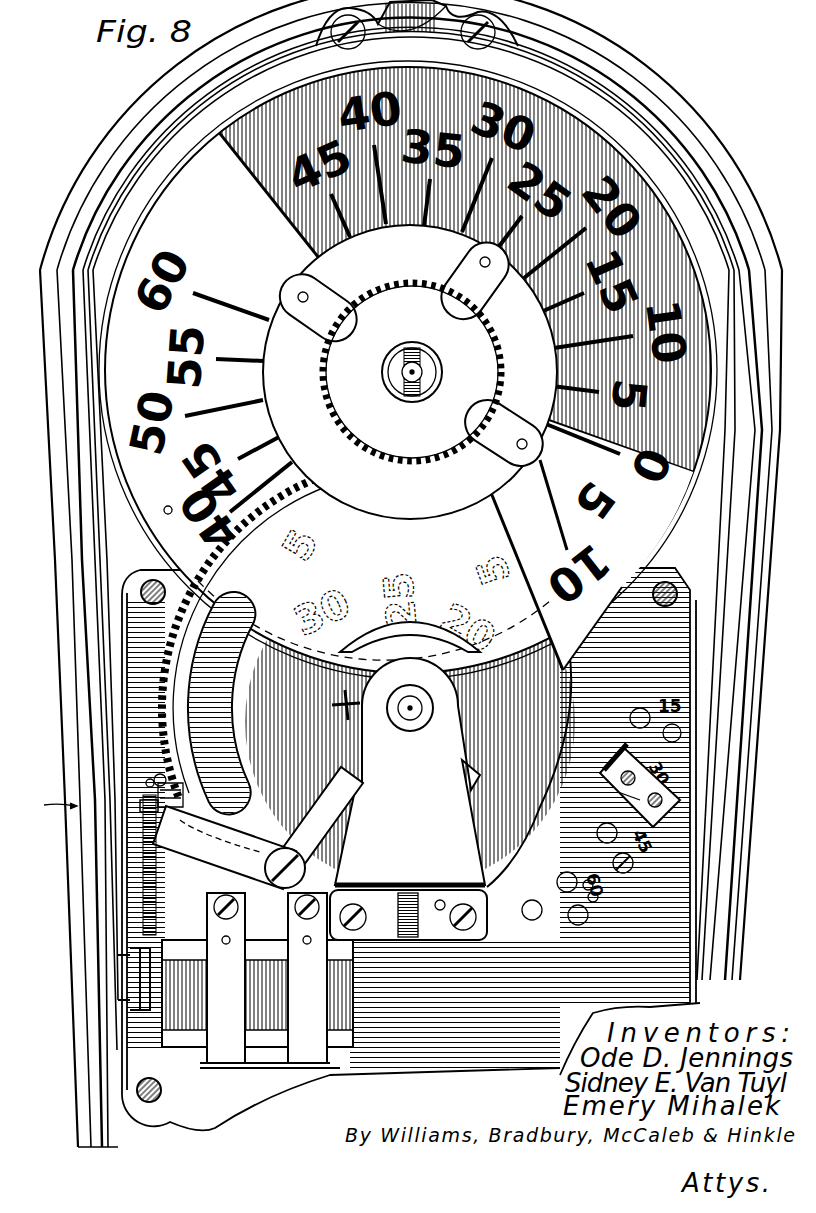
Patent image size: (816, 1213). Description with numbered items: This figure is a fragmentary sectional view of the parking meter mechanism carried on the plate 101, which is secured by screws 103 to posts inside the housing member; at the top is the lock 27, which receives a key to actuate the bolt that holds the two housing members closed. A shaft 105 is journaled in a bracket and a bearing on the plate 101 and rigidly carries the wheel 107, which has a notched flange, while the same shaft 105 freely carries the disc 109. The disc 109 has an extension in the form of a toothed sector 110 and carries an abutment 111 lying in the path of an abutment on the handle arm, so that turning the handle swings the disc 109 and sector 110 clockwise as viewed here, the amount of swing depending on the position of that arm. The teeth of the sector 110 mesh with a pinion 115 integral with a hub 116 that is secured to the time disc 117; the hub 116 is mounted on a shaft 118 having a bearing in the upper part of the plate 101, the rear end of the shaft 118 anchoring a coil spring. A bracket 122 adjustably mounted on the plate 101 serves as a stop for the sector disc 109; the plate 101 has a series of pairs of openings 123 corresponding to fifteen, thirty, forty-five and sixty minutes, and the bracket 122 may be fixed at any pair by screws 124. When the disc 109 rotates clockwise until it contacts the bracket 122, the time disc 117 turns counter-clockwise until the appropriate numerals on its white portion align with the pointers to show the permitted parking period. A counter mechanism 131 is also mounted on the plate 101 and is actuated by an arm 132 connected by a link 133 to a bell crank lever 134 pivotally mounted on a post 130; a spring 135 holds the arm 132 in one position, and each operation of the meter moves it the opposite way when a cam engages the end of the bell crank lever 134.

The lock 27 is at (49, 801).
The plate 101 is at (690, 646).
The screws 103 is at (150, 580).
The shaft 105 is at (425, 706).
The wheel 107 is at (455, 800).
The disc 109 is at (556, 746).
The sector 110 is at (180, 623).
The abutment 111 is at (332, 706).
The pinion 115 is at (404, 290).
The hub 116 is at (428, 380).
The time disc 117 is at (165, 509).
The shaft 118 is at (412, 372).
The bracket 122 is at (652, 795).
The openings 123 is at (637, 716).
The screws 124 is at (628, 798).
The post 130 is at (258, 828).
The counter mechanism 131 is at (355, 983).
The arm 132 is at (140, 978).
The link 133 is at (150, 850).
The bell crank lever 134 is at (207, 847).
The spring 135 is at (232, 872).